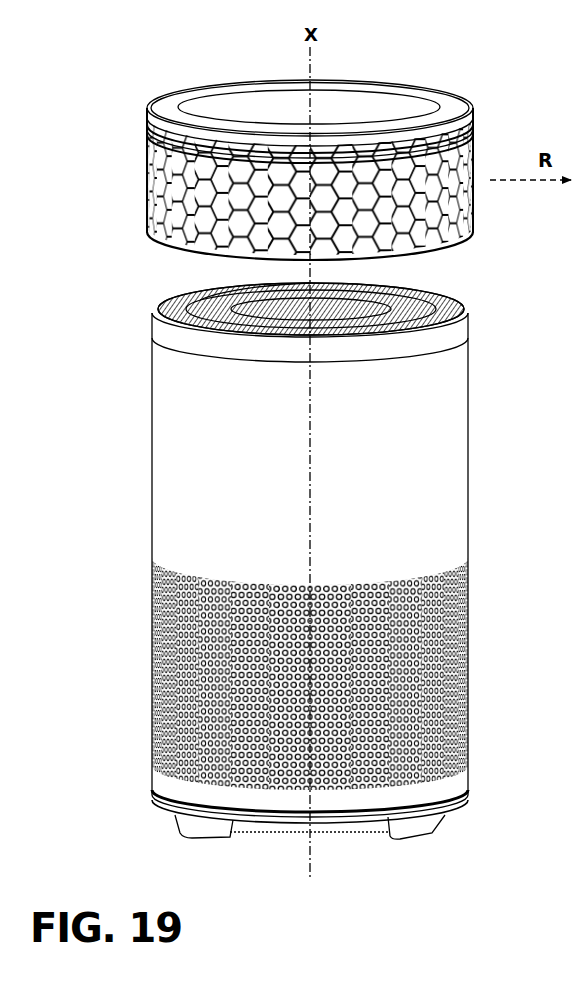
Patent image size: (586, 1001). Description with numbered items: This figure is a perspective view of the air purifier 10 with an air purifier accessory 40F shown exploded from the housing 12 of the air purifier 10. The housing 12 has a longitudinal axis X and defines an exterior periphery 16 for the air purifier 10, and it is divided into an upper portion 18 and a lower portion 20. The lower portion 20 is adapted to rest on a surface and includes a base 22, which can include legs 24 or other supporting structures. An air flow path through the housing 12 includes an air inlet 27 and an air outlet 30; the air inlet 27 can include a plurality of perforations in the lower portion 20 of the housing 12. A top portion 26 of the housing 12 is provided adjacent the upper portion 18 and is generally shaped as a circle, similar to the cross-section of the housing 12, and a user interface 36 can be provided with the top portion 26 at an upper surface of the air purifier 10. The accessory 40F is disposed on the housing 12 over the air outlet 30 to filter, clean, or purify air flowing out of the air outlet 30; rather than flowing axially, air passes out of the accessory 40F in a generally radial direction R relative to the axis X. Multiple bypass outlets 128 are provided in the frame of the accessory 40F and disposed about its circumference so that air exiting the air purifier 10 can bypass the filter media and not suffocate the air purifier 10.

The air purifier accessory 40F is at (300, 164).
The bypass outlets 128 is at (460, 130).
The air purifier 10 is at (276, 582).
The housing 12 is at (470, 500).
The exterior periphery 16 is at (260, 502).
The upper portion 18 is at (182, 365).
The lower portion 20 is at (283, 675).
The base 22 is at (254, 850).
The legs 24 is at (418, 828).
The top portion 26 is at (152, 313).
The air inlet 27 is at (470, 630).
The air outlet 30 is at (410, 293).
The user interface 36 is at (282, 284).